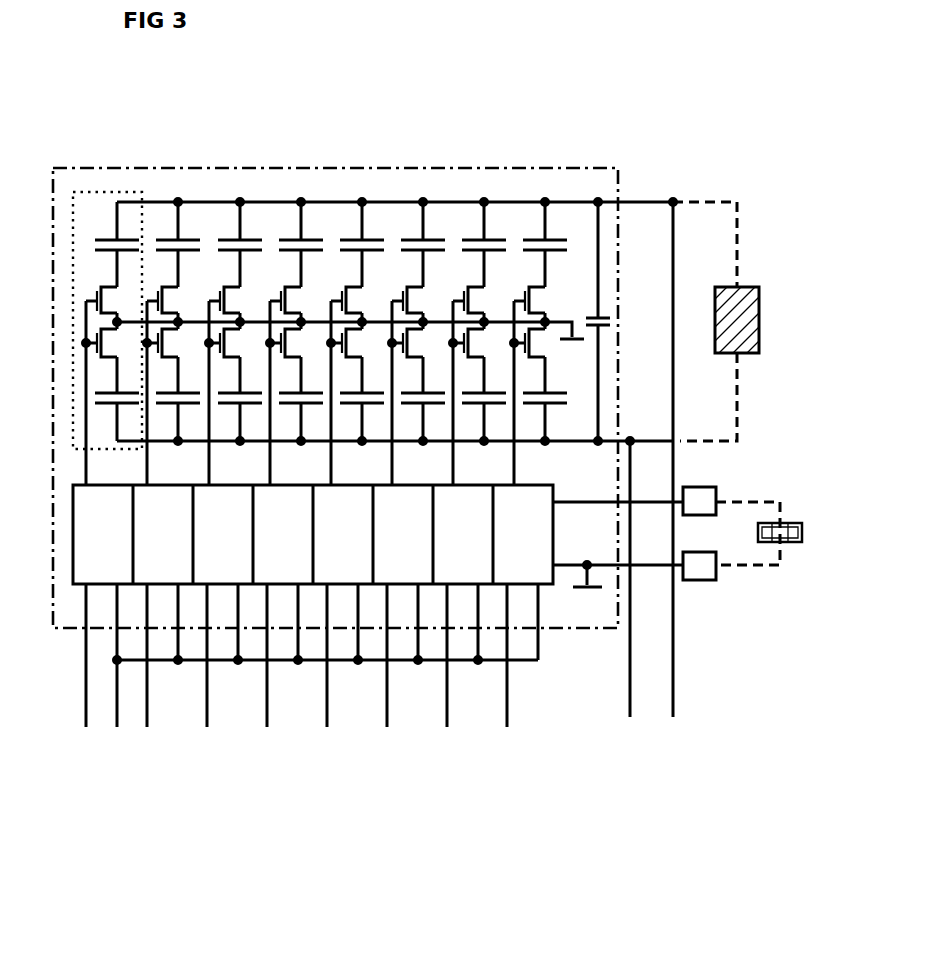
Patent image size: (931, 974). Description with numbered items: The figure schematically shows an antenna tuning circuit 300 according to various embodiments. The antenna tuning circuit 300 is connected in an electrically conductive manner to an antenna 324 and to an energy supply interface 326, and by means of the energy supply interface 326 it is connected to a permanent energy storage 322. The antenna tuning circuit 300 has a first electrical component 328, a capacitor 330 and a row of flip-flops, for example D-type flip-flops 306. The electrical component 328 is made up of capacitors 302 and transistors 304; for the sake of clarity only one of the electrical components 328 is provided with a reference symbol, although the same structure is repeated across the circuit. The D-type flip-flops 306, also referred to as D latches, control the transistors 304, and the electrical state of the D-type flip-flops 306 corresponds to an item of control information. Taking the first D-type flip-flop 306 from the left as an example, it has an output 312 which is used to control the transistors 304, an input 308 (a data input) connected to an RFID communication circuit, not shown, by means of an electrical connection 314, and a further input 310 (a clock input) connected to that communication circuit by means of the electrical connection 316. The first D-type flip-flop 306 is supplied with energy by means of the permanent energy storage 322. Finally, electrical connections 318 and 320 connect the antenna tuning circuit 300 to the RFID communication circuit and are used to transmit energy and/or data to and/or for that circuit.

The antenna tuning circuit 300 is at (358, 166).
The capacitors 302 is at (107, 378).
The transistors 304 is at (96, 345).
The D-type flip-flops 306 is at (523, 563).
The input 308 is at (278, 670).
The further input 310 is at (117, 586).
The output 312 is at (80, 484).
The electrical connection 314 is at (86, 728).
The electrical connection 316 is at (118, 726).
The electrical connection 318 is at (628, 718).
The electrical connection 320 is at (672, 708).
The permanent energy storage 322 is at (780, 537).
The antenna 324 is at (747, 290).
The energy supply interface 326 is at (700, 503).
The first electrical component 328 is at (139, 191).
The capacitor 330 is at (605, 313).